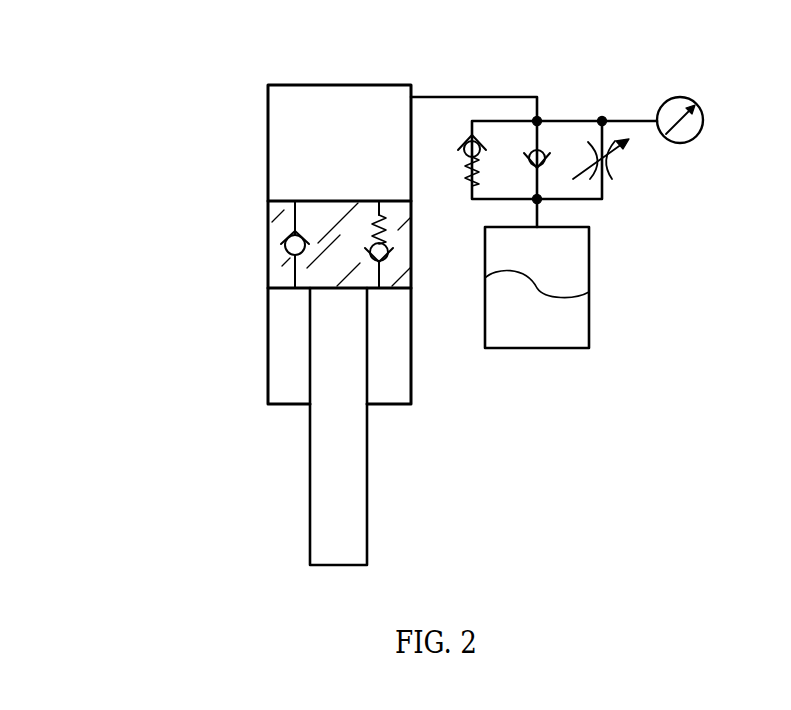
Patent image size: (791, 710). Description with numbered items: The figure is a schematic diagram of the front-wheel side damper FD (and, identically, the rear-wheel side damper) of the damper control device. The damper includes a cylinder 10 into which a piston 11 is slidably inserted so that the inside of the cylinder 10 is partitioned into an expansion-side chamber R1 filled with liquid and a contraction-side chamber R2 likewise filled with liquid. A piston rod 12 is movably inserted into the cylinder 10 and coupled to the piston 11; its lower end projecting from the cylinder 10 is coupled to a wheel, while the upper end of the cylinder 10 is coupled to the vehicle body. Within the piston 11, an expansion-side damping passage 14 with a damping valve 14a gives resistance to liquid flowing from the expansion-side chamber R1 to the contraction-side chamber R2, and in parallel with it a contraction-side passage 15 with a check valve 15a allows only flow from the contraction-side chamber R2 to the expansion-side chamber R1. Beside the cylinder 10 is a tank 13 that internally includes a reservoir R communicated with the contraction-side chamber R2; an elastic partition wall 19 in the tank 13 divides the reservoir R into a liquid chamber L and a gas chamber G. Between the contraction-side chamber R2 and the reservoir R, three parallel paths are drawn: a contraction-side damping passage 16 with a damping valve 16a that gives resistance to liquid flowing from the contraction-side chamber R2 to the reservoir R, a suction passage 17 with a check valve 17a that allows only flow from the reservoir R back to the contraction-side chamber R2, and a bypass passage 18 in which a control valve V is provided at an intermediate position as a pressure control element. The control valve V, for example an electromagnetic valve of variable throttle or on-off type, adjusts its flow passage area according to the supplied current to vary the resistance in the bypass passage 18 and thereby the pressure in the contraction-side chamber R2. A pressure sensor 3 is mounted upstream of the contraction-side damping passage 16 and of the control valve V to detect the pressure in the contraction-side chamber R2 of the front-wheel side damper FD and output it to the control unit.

The pressure sensor 3 is at (678, 97).
The cylinder 10 is at (268, 96).
The piston 11 is at (268, 220).
The piston rod 12 is at (310, 497).
The tank 13 is at (589, 340).
The expansion-side damping passage 14 is at (418, 274).
The damping valve 14a is at (388, 258).
The contraction-side passage 15 is at (248, 263).
The check valve 15a is at (284, 238).
The contraction-side damping passage 16 is at (454, 135).
The damping valve 16a is at (464, 160).
The suction passage 17 is at (542, 99).
The check valve 17a is at (528, 150).
The bypass passage 18 is at (587, 120).
The elastic partition wall 19 is at (538, 292).
The control valve V is at (610, 165).
The reservoir R is at (672, 238).
The expansion-side chamber R1 is at (273, 386).
The contraction-side chamber R2 is at (310, 95).
The liquid chamber L is at (578, 270).
The gas chamber G is at (575, 312).
The front-wheel side damper FD is at (203, 142).